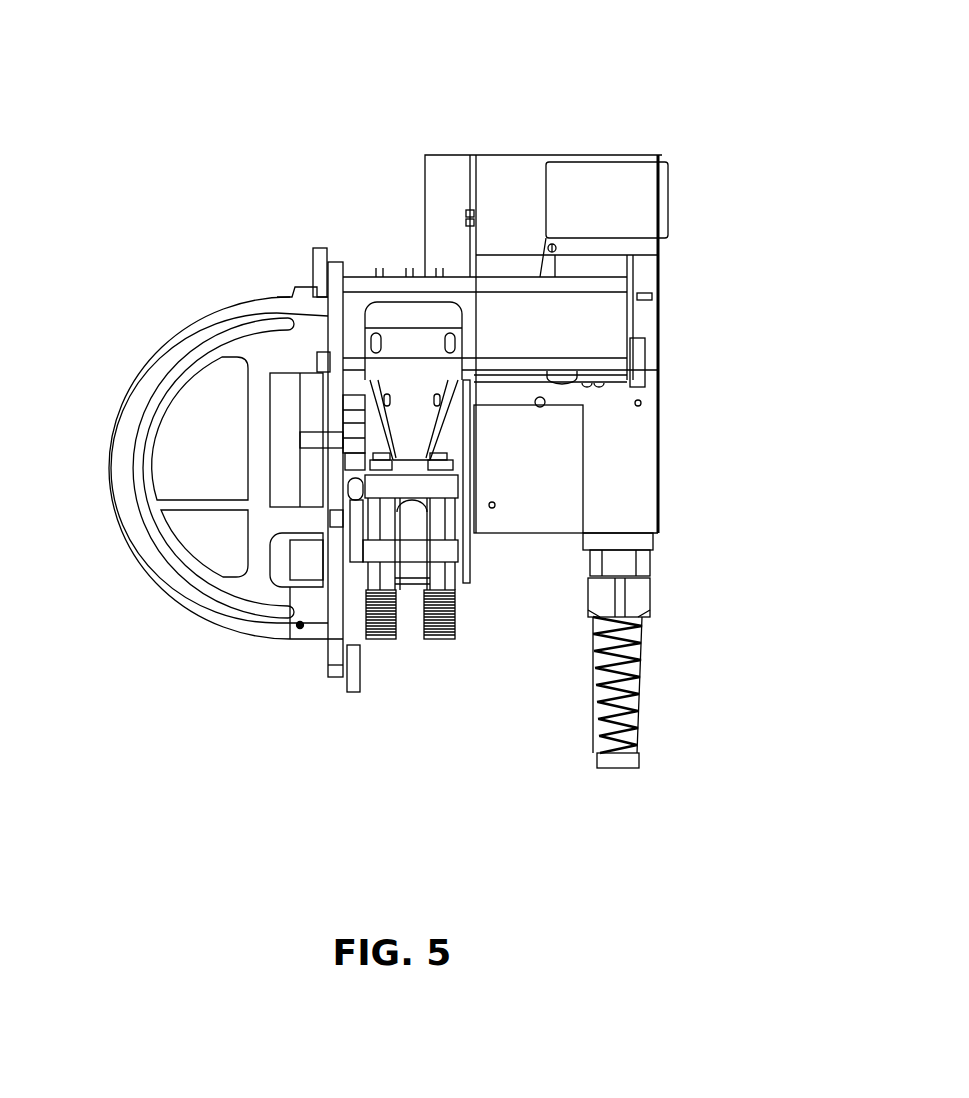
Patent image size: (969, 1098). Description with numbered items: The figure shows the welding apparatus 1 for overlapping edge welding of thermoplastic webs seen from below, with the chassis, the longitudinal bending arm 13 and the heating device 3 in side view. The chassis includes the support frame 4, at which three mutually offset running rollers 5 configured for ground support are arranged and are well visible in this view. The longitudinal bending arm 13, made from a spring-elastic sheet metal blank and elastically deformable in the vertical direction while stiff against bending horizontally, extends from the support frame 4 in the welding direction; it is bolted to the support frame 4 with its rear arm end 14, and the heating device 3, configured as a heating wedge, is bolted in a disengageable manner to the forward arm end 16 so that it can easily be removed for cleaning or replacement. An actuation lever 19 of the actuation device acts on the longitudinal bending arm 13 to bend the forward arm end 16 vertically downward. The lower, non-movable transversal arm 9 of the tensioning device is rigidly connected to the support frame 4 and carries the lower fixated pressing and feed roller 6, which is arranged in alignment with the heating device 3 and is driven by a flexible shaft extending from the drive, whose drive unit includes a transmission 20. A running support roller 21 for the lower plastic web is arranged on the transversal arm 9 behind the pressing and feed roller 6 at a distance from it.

The welding apparatus 1 is at (145, 157).
The heating device 3 is at (438, 520).
The support frame 4 is at (585, 333).
The running rollers 5 is at (315, 263).
The lower pressing and feed roller 6 is at (437, 640).
The lower transversal arm 9 is at (150, 558).
The longitudinal bending arm 13 is at (414, 428).
The rear arm end 14 is at (405, 348).
The forward arm end 16 is at (410, 507).
The actuation lever 19 is at (333, 515).
The transmission 20 is at (591, 197).
The running support roller 21 is at (378, 552).